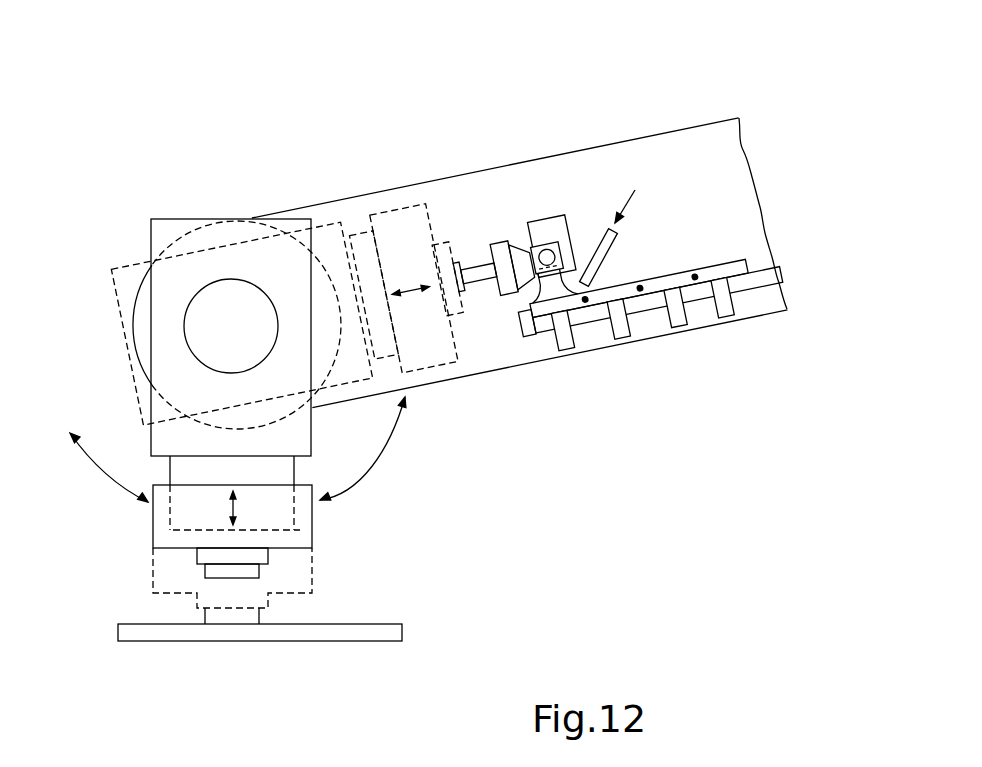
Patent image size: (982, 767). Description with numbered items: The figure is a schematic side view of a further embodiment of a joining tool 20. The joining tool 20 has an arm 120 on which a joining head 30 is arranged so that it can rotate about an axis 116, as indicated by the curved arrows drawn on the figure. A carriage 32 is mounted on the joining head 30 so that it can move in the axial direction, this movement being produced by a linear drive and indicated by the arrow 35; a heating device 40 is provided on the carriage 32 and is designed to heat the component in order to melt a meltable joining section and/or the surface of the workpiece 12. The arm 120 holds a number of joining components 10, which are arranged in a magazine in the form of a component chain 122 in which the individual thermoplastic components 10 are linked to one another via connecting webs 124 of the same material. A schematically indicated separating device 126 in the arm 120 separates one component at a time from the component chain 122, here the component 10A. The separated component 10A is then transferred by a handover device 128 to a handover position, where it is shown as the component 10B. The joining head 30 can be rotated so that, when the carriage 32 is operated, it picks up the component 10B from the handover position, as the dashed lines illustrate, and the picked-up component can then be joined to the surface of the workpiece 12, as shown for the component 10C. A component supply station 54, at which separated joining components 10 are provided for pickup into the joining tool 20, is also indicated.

The joining component 10 is at (730, 312).
The separated component 10A is at (568, 340).
The component in handover position 10B is at (500, 252).
The joined component 10C is at (253, 568).
The workpiece 12 is at (352, 636).
The joining tool 20 is at (554, 256).
The joining head 30 is at (170, 232).
The carriage 32 is at (152, 488).
The arrow indicating axial movement 35 is at (227, 507).
The heating device 40 is at (263, 557).
The component supply station 54 is at (737, 220).
The axis 116 is at (232, 327).
The arm 120 is at (688, 148).
The component chain 122 is at (730, 260).
The connecting webs 124 is at (698, 285).
The separating device 126 is at (603, 248).
The handover device 128 is at (542, 253).